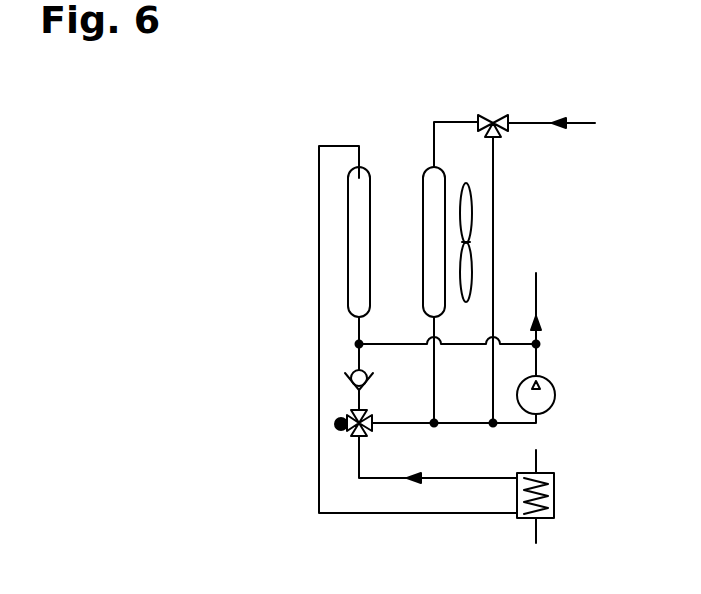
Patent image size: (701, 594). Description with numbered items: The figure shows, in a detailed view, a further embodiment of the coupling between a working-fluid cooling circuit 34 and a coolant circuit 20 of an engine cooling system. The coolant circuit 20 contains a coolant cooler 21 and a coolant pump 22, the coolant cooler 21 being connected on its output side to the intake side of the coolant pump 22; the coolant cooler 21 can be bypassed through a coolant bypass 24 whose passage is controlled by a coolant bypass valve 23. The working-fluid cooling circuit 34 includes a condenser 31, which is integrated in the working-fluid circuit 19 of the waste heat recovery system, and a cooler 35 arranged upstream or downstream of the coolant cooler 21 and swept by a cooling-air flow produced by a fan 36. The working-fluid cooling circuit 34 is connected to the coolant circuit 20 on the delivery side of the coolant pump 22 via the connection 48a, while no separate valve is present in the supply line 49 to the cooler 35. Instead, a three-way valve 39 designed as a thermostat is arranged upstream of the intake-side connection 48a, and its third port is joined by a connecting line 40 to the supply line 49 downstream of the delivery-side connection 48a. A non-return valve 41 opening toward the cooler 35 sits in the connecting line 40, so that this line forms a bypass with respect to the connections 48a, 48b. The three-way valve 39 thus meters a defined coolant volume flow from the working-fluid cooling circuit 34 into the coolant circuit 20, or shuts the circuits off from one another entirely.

The working-fluid circuit 19 is at (538, 528).
The coolant circuit 20 is at (575, 120).
The coolant cooler 21 is at (422, 205).
The coolant pump 22 is at (548, 390).
The coolant bypass valve 23 is at (493, 112).
The coolant bypass 24 is at (496, 207).
The condenser 31 is at (556, 490).
The working-fluid cooling circuit 34 is at (370, 515).
The cooler 35 is at (372, 203).
The fan 36 is at (470, 242).
The 3-way valve 39 is at (336, 424).
The connecting line 40 is at (356, 410).
The non-return valve 41 is at (347, 372).
The connection 48a is at (436, 425).
The connection 48b is at (536, 344).
The supply line 49 is at (389, 343).